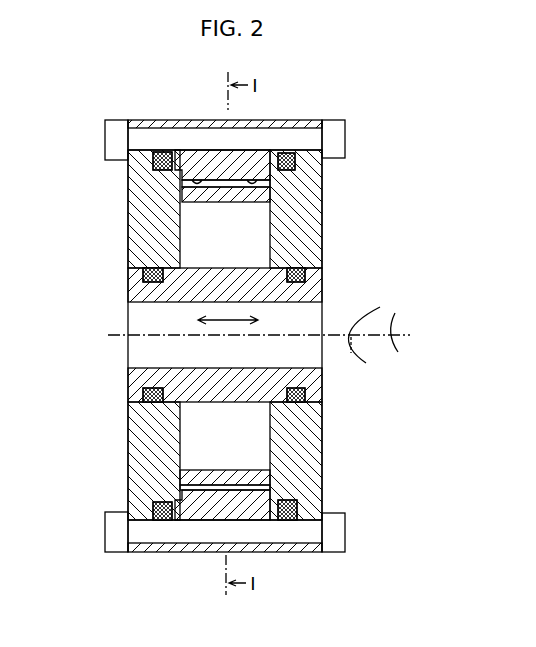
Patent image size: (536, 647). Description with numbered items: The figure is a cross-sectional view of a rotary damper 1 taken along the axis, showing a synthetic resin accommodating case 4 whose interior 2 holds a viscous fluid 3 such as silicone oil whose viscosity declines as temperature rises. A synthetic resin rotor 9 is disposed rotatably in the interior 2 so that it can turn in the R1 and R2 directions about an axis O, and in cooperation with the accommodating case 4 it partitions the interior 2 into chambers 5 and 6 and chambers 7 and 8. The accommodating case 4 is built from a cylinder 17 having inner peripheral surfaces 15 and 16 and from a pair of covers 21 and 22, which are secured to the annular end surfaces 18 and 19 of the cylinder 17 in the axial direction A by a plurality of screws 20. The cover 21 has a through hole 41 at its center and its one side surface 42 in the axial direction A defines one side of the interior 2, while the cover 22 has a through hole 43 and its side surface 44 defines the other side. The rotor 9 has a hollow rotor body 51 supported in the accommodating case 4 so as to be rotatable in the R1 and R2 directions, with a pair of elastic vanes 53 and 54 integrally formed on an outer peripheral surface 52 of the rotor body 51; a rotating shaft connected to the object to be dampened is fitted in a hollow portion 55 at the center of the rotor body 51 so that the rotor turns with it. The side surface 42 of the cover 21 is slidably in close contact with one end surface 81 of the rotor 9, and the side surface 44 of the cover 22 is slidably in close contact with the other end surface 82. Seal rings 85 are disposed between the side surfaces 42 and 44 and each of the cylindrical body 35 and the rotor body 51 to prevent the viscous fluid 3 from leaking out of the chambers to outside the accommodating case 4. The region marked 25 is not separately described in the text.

The rotary damper 1 is at (102, 546).
The interior 2 is at (258, 236).
The viscous fluid 3 is at (272, 450).
The accommodating case 4 is at (158, 117).
The chamber 5 is at (256, 178).
The chamber 6 is at (193, 252).
The chamber 7 is at (290, 530).
The chamber 8 is at (270, 468).
The rotor 9 is at (275, 226).
The inner peripheral surface 15 is at (197, 180).
The inner peripheral surface 16 is at (200, 492).
The cylinder 17 is at (307, 552).
The annular end surface 18 is at (153, 544).
The annular end surface 19 is at (305, 124).
The screw 20 is at (145, 138).
The cover 21 is at (158, 197).
The cover 22 is at (305, 415).
The second groove 25 is at (250, 182).
The cylindrical body 35 is at (258, 508).
The through hole 41 is at (150, 392).
The side surface 42 is at (185, 467).
The through hole 43 is at (312, 292).
The side surface 44 is at (305, 200).
The rotor body 51 is at (230, 398).
The outer peripheral surface 52 is at (297, 408).
The elastic vane 53 is at (160, 266).
The elastic vane 54 is at (220, 494).
The hollow portion 55 is at (145, 352).
The end surface 81 is at (183, 237).
The end surface 82 is at (272, 458).
The seal ring 85 is at (153, 160).
The axial direction A is at (207, 333).
The axis O is at (259, 361).
The R1 direction R1 is at (402, 362).
The R2 direction R2 is at (378, 316).